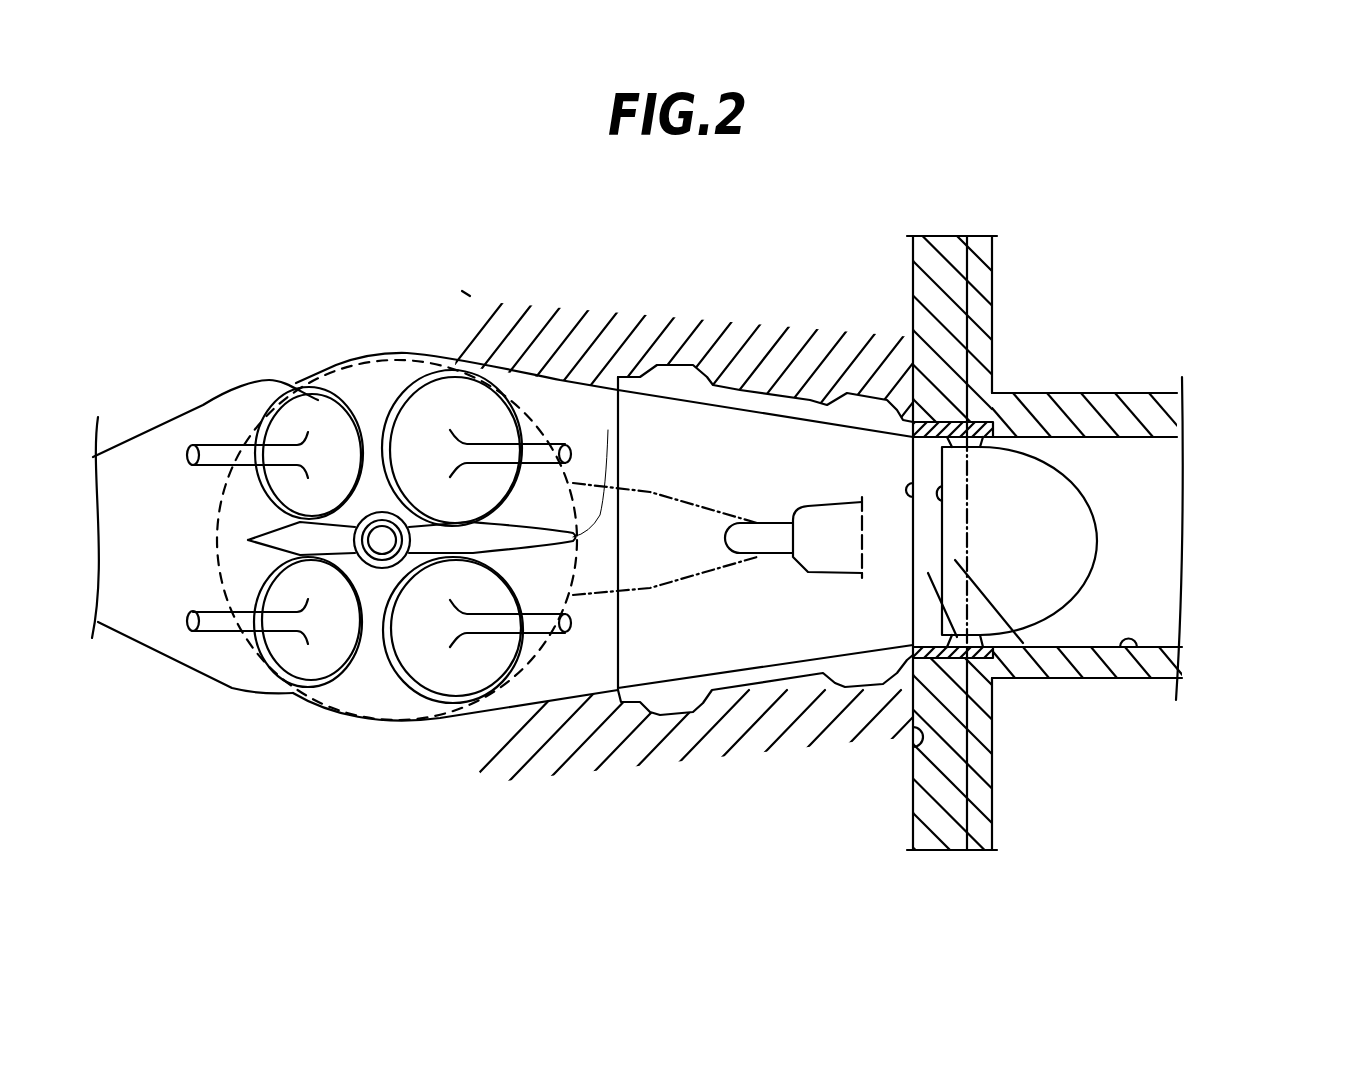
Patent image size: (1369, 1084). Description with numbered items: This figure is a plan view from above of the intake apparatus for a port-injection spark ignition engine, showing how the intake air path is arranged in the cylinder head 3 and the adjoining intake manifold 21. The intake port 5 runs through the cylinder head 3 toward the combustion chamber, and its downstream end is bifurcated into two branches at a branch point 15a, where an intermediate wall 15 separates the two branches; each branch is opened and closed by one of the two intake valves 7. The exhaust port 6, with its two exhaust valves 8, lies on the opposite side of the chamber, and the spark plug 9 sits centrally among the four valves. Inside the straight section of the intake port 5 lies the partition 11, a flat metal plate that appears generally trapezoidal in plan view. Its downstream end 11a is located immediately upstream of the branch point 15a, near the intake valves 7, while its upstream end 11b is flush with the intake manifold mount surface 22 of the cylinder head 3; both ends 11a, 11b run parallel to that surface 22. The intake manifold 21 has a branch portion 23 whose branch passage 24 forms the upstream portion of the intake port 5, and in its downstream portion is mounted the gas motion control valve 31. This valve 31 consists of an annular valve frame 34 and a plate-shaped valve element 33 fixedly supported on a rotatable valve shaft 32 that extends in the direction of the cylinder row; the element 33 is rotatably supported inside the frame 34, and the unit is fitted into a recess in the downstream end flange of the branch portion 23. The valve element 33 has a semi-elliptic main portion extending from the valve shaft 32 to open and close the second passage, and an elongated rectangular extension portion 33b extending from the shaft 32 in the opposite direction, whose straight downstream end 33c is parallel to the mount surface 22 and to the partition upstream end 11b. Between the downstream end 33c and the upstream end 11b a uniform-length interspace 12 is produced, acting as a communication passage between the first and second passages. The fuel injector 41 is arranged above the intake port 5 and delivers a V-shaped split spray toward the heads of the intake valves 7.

The cylinder head 3 is at (785, 738).
The intake port 5 is at (573, 381).
The exhaust port 6 is at (157, 457).
The intake valve 7 is at (437, 397).
The exhaust valve 8 is at (310, 380).
The spark plug 9 is at (378, 567).
The partition 11 is at (722, 447).
The downstream end of partition 11a is at (613, 645).
The upstream end of partition 11b is at (913, 480).
The interspace 12 is at (997, 680).
The intermediate wall 15 is at (517, 527).
The branch point 15a is at (573, 537).
The intake manifold 21 is at (1150, 363).
The intake manifold mount surface 22 is at (925, 765).
The branch portion 23 is at (1107, 413).
The branch passage 24 is at (1133, 650).
The gas motion control valve 31 is at (1113, 517).
The valve shaft 32 is at (993, 270).
The valve element 33 is at (1040, 543).
The extension portion 33b is at (1060, 678).
The downstream end of valve element 33c is at (948, 507).
The valve frame 34 is at (955, 421).
The fuel injector 41 is at (773, 527).